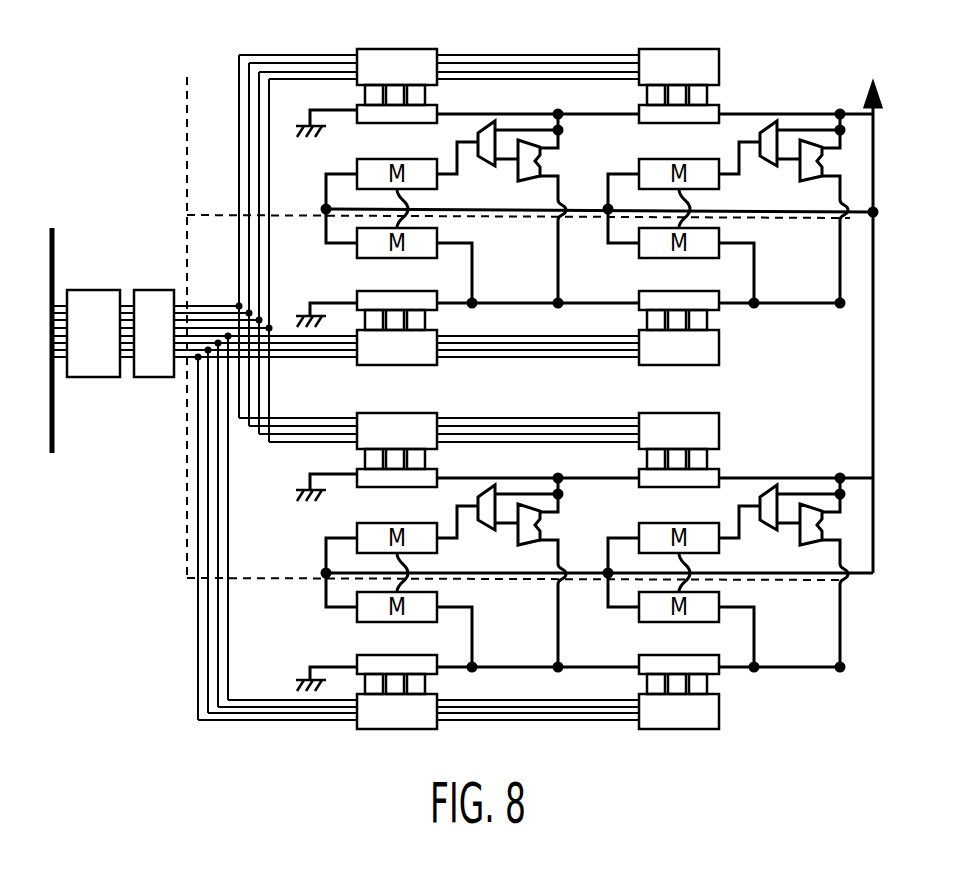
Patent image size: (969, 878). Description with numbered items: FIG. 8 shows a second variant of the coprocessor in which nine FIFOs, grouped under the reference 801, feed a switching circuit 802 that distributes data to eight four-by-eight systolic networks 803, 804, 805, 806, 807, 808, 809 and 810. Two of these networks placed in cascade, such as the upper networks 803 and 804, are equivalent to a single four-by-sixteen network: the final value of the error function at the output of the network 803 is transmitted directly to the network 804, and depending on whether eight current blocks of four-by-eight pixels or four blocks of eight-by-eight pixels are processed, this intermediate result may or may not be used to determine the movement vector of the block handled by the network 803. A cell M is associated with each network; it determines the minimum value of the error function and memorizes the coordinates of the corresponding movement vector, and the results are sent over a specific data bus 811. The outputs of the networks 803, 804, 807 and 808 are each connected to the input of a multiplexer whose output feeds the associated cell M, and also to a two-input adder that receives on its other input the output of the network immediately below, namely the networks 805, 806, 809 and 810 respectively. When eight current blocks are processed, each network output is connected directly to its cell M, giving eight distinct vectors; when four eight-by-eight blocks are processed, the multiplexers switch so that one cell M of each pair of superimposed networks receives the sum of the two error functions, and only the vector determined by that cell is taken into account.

The FIFOs 801 is at (100, 288).
The switching circuit 802 is at (150, 378).
The 4×8 systolic network 803 is at (375, 49).
The 4×8 systolic network 804 is at (673, 49).
The 4×8 systolic network 805 is at (372, 365).
The 4×8 systolic network 806 is at (719, 347).
The 4×8 systolic network 807 is at (420, 413).
The 4×8 systolic network 808 is at (652, 413).
The 4×8 systolic network 809 is at (367, 730).
The 4×8 systolic network 810 is at (645, 730).
The data bus 811 is at (872, 388).